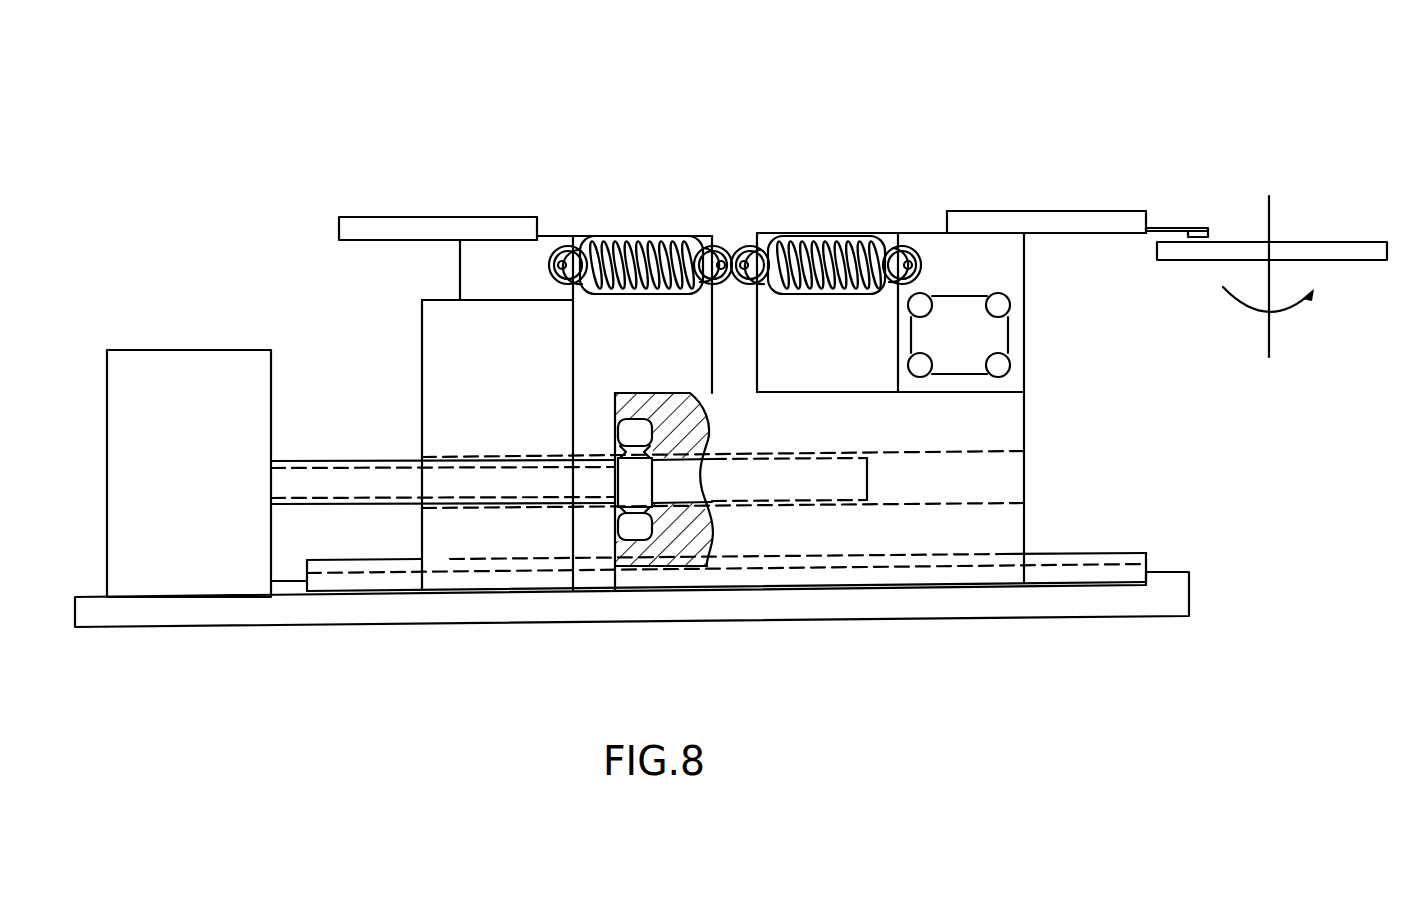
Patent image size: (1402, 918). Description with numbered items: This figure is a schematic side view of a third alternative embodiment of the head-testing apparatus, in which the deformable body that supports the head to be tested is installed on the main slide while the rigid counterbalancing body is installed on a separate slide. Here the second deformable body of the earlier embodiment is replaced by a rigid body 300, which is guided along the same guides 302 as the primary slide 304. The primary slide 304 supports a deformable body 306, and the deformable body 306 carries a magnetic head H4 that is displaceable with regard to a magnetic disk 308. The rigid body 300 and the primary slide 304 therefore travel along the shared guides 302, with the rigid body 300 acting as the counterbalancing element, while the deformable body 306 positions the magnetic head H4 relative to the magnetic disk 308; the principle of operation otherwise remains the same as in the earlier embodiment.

The rigid body 300 is at (453, 343).
The guides 302 is at (1123, 577).
The primary slide 304 is at (993, 524).
The deformable body 306 is at (952, 267).
The magnetic disk 308 is at (1350, 247).
The magnetic head H4 is at (1192, 228).